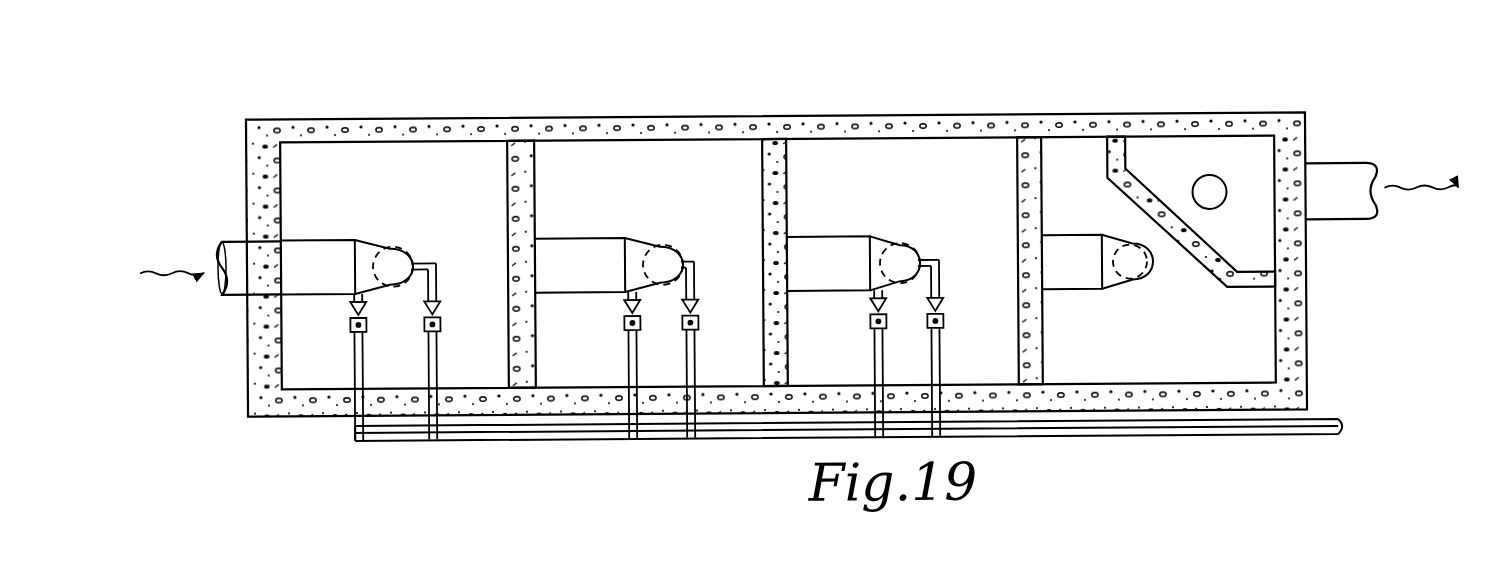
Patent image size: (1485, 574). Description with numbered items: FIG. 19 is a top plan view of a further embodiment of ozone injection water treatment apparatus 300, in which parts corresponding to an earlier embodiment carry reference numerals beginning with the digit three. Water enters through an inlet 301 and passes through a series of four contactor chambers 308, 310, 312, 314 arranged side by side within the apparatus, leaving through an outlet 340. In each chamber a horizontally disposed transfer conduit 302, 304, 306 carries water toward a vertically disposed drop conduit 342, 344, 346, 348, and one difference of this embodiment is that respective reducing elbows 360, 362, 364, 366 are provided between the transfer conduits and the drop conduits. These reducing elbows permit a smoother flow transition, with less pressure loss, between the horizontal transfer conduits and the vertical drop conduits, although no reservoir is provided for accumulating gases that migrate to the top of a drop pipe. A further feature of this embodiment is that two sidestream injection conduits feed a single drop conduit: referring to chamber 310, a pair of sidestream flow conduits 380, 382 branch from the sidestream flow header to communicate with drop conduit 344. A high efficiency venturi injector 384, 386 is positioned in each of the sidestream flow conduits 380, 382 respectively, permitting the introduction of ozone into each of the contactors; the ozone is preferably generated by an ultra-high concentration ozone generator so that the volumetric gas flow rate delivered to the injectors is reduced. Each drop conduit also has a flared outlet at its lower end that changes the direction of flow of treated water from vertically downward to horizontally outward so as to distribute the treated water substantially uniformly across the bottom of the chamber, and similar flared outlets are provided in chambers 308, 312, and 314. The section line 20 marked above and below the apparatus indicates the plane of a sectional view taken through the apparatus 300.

The ozone injection water treatment apparatus 300 is at (450, 55).
The inlet pipe 301 is at (232, 239).
The transfer conduit 302 is at (548, 248).
The transfer conduit 304 is at (808, 245).
The transfer conduit 306 is at (1047, 247).
The chamber 308 is at (312, 157).
The chamber 310 is at (560, 151).
The chamber 312 is at (805, 152).
The chamber 314 is at (1052, 154).
The outlet pipe 340 is at (1325, 174).
The drop conduit 342 is at (400, 247).
The drop conduit 344 is at (665, 249).
The drop conduit 346 is at (912, 248).
The drop conduit 348 is at (1140, 268).
The reducing elbow 360 is at (372, 239).
The reducing elbow 362 is at (671, 237).
The reducing elbow 364 is at (917, 235).
The reducing elbow 366 is at (1138, 288).
The sidestream flow conduit 380 is at (598, 365).
The sidestream flow conduit 382 is at (725, 349).
The high efficiency venturi injector 384 is at (626, 352).
The high efficiency venturi injector 386 is at (697, 305).
The section line 20 is at (696, 85).